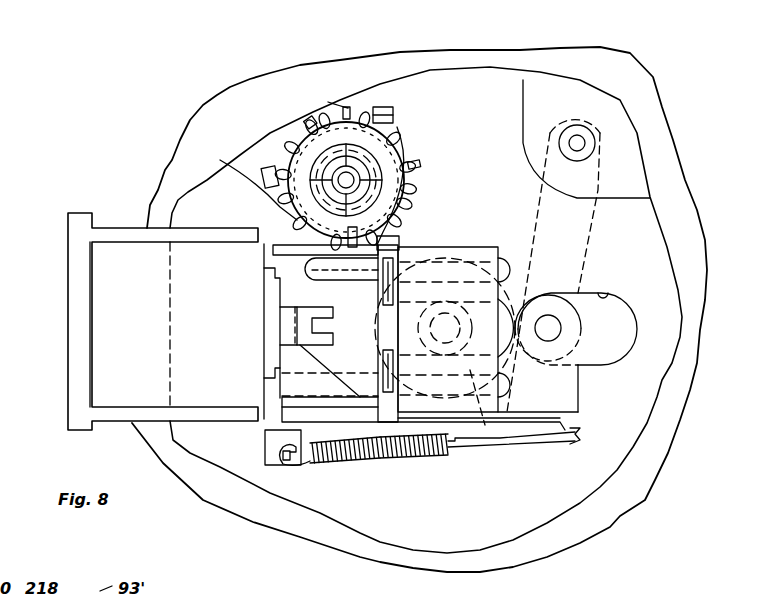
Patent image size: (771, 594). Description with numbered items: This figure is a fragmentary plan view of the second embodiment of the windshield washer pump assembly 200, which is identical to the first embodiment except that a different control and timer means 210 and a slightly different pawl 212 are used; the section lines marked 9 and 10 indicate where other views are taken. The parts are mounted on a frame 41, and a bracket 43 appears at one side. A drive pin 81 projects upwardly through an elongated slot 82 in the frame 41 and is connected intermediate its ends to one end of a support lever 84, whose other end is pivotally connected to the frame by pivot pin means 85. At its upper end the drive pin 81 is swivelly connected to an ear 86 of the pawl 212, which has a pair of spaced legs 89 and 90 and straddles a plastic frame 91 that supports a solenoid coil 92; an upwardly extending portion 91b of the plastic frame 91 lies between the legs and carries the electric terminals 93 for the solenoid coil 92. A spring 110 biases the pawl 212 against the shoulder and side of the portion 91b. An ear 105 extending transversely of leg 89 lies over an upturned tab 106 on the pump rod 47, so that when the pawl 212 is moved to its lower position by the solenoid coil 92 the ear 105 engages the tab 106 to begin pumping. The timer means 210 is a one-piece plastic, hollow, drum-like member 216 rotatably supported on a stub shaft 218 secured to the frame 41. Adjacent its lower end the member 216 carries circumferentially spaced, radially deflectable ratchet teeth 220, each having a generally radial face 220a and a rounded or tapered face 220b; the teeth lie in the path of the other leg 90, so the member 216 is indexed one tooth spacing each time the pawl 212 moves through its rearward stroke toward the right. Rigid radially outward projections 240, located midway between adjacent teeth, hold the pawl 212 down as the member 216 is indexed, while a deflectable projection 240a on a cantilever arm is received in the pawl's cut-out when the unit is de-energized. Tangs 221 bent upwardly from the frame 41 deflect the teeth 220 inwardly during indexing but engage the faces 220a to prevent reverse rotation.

The frame 41 is at (505, 90).
The bracket 43 is at (107, 225).
The pump rod 47 is at (275, 307).
The drive pin 81 is at (549, 320).
The elongated slot 82 is at (602, 296).
The support lever 84 is at (600, 172).
The pivot pin means 85 is at (576, 142).
The ear 86 is at (547, 385).
The leg 89 is at (290, 410).
The leg 90 is at (273, 244).
The plastic frame 91 is at (407, 458).
The upwardly extending portion 91b is at (374, 460).
The solenoid coil 92 is at (486, 443).
The electric terminals 93 is at (382, 363).
The ear 105 is at (287, 347).
The upturned tab 106 is at (322, 328).
The spring 110 is at (350, 465).
The washer pump assembly 200 is at (457, 83).
The control and timer means 210 is at (328, 100).
The pawl 212 is at (477, 248).
The drum-like member 216 is at (397, 152).
The stub shaft 218 is at (358, 186).
The ratchet teeth 220 is at (303, 120).
The face 220a is at (395, 123).
The face 220b is at (366, 113).
The tangs 221 is at (382, 107).
The projections 240 is at (330, 48).
The projection 240a is at (393, 262).
The section line 9- 9 is at (240, 332).
The section line 10- 10 is at (641, 104).